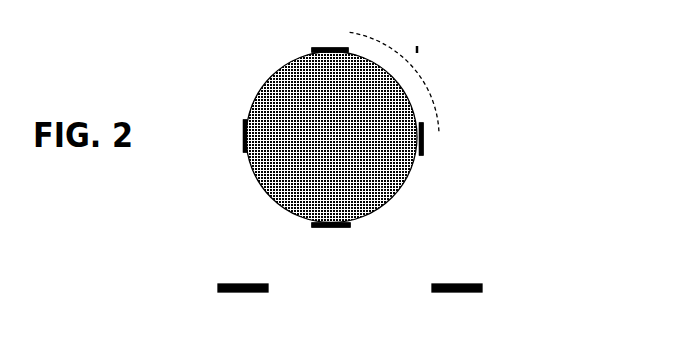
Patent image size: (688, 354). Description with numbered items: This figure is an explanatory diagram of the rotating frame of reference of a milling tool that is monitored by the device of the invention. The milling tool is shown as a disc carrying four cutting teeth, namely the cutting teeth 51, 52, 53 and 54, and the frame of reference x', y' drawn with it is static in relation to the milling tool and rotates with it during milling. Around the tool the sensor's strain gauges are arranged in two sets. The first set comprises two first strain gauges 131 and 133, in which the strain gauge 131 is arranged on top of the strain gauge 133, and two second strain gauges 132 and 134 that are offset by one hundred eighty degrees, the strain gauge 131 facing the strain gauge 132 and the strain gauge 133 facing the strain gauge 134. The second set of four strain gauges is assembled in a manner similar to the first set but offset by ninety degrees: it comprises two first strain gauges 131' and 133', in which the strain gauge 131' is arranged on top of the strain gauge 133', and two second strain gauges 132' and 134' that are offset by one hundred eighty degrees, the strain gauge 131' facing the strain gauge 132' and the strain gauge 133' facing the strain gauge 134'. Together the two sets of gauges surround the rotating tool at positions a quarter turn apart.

The cutting tooth 51 is at (333, 112).
The cutting tooth 52 is at (306, 136).
The cutting tooth 53 is at (337, 162).
The cutting tooth 54 is at (357, 132).
The first strain gauge 131 is at (167, 111).
The first strain gauge 133 is at (167, 111).
The second strain gauge 132 is at (534, 157).
The second strain gauge 134 is at (534, 157).
The first strain gauge 131' is at (395, 287).
The first strain gauge 133' is at (395, 287).
The second strain gauge 132' is at (420, 26).
The second strain gauge 134' is at (420, 26).